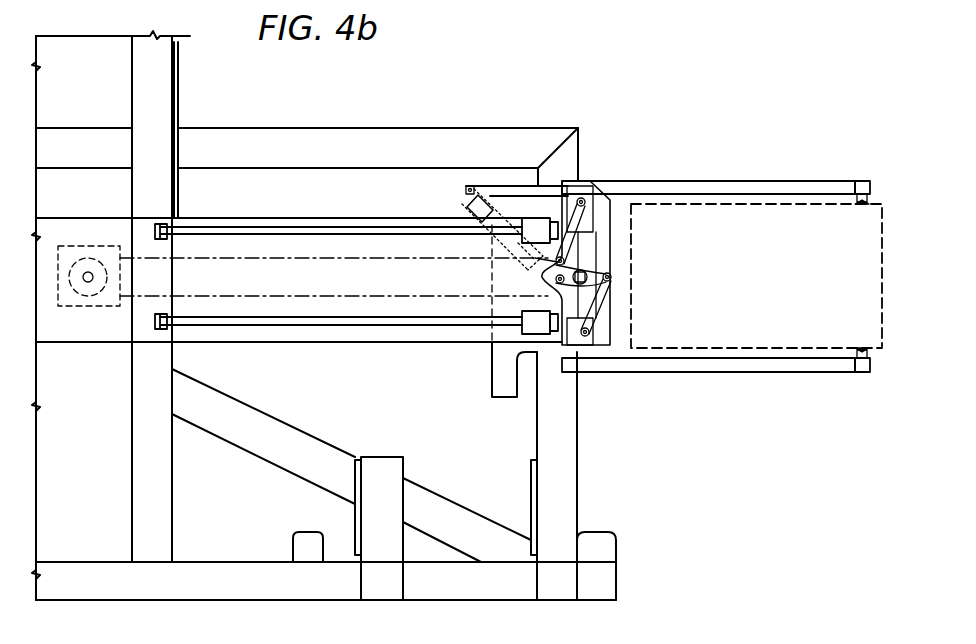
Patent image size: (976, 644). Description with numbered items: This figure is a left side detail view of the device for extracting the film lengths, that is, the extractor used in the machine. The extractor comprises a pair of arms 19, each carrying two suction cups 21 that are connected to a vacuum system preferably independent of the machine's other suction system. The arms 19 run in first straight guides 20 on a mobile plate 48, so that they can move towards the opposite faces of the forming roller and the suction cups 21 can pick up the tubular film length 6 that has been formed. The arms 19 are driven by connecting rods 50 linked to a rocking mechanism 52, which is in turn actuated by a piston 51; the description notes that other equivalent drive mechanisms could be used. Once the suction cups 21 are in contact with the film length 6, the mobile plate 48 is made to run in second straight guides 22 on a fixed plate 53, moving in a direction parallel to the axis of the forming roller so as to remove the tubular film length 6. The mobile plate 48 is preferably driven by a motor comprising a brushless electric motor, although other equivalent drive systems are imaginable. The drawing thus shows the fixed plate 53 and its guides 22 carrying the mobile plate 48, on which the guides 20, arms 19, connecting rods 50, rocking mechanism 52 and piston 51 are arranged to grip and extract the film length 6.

The tubular film length 6 is at (769, 283).
The arms 19 is at (724, 187).
The first straight guides 20 is at (565, 350).
The suction cups 21 is at (872, 200).
The second straight guides 22 is at (372, 320).
The mobile plate 48 is at (510, 203).
The connecting rods 50 is at (597, 268).
The piston 51 is at (472, 210).
The rocking mechanism 52 is at (603, 272).
The fixed plate 53 is at (300, 250).